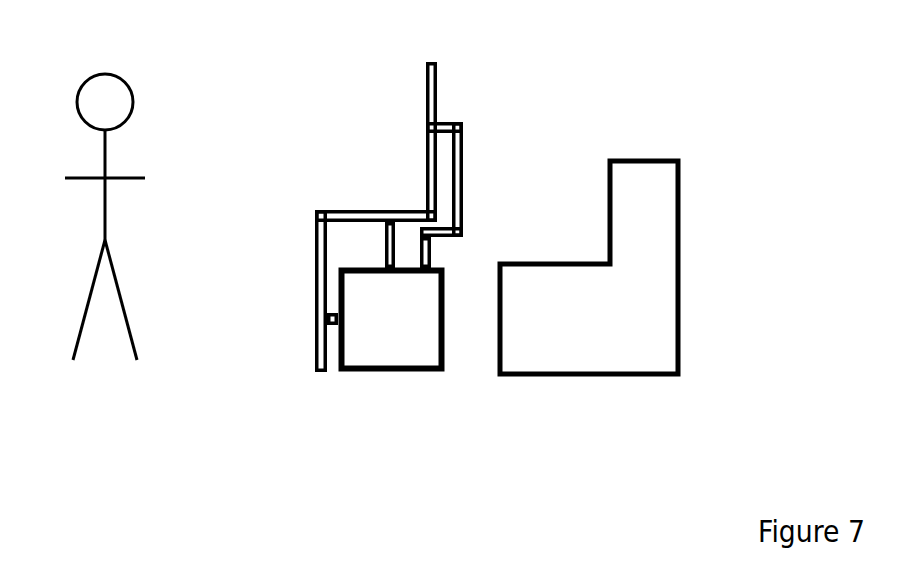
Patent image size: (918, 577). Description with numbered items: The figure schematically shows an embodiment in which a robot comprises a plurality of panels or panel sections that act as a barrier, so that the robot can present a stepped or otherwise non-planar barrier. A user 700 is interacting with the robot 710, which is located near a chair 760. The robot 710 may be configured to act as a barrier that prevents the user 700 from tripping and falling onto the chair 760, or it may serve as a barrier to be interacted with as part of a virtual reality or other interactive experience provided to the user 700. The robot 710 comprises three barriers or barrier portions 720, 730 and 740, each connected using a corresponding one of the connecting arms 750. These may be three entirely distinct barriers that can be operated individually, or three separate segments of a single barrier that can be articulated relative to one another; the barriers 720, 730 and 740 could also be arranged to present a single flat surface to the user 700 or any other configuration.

The user 700 is at (102, 360).
The robot 710 is at (392, 372).
The barrier 720 is at (314, 295).
The barrier 730 is at (372, 210).
The barrier 740 is at (425, 138).
The connecting arms 750 is at (340, 308).
The chair 760 is at (680, 266).